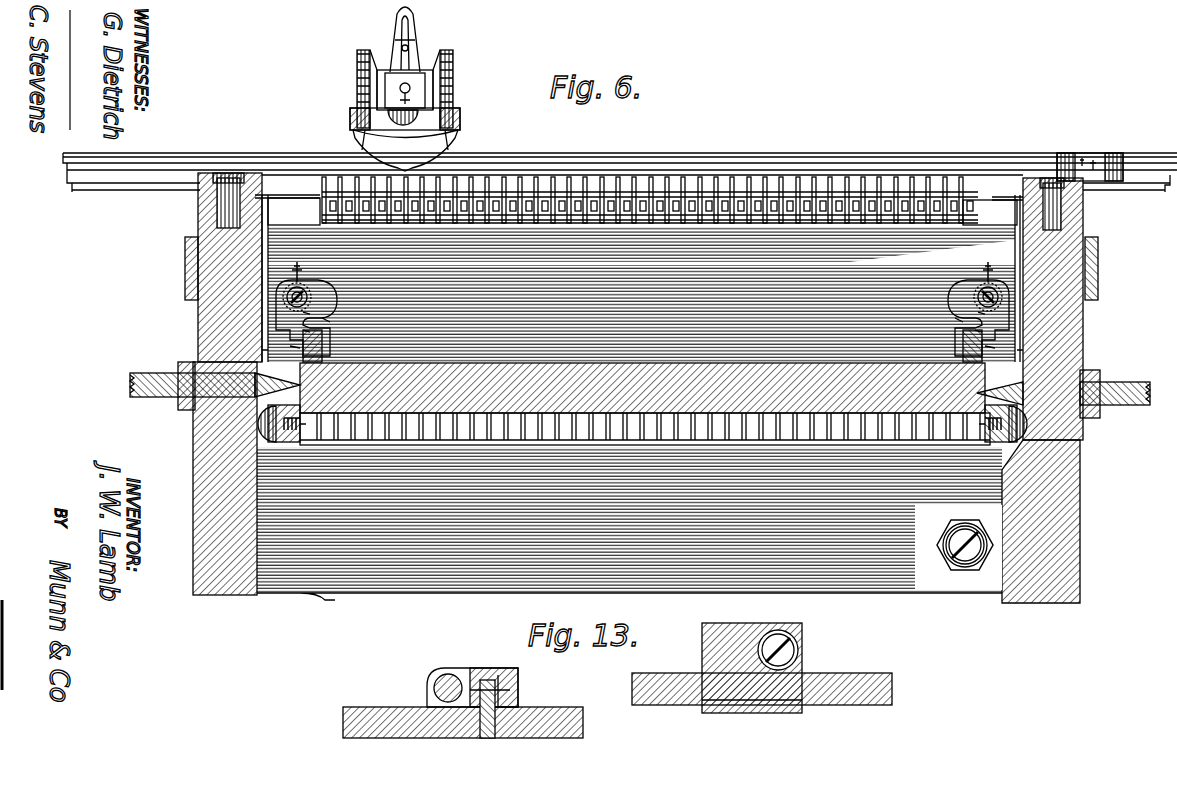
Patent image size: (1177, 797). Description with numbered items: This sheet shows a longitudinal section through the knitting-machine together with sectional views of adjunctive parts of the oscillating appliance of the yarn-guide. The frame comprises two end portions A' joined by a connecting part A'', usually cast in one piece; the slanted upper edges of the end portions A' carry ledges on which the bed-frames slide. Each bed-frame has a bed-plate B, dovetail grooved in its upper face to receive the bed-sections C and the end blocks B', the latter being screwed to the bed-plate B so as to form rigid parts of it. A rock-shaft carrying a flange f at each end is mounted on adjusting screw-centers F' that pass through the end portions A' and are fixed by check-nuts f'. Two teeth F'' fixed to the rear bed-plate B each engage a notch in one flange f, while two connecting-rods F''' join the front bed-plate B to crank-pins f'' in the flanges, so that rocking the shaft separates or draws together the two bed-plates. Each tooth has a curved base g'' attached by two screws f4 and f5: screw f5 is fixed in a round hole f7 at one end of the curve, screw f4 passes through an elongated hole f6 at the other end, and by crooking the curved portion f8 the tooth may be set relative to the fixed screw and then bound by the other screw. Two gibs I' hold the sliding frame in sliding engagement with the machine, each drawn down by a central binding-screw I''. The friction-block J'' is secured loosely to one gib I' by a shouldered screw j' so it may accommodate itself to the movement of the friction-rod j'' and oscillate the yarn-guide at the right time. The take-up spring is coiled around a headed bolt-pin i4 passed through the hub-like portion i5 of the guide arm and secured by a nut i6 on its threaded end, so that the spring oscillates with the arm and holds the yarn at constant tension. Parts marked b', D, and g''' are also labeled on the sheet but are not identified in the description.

In FIG. 6, the gibs I' is at (640, 282).
In FIG. 13, the gibs I' is at (617, 705).
In FIG. 6, the central binding-screw I'' is at (638, 177).
In FIG. 6, the plate b' is at (639, 184).
In FIG. 6, the end blocks B' is at (642, 211).
In FIG. 6, the comb / needle guide D is at (508, 185).
In FIG. 6, the bed-sections C is at (644, 208).
In FIG. 6, the bed-plate B is at (641, 313).
In FIG. 6, the screw f5 is at (300, 300).
In FIG. 6, the round hole f7 is at (292, 285).
In FIG. 6, the curved portion f8 is at (302, 312).
In FIG. 6, the screw f4 is at (305, 330).
In FIG. 6, the elongated hole f6 is at (300, 348).
In FIG. 6, the check-nuts f' is at (644, 343).
In FIG. 6, the teeth F'' is at (642, 340).
In FIG. 6, the curved bases g'' is at (337, 323).
In FIG. 6, the spring arm g''' is at (950, 340).
In FIG. 6, the adjusting screw-centers F' is at (640, 393).
In FIG. 6, the flange f is at (645, 429).
In FIG. 6, the connecting-rods F''' is at (645, 437).
In FIG. 6, the crank-pins f'' is at (636, 430).
In FIG. 6, the end portions A' is at (636, 482).
In FIG. 6, the connecting part A'' is at (629, 520).
In FIG. 6, the friction-block J'' is at (1090, 152).
In FIG. 13, the friction-block J'' is at (614, 680).
In FIG. 6, the screw j' is at (1075, 148).
In FIG. 13, the screw j' is at (650, 668).
In FIG. 6, the friction-rod j'' is at (620, 159).
In FIG. 13, the friction-rod j'' is at (603, 685).
In FIG. 6, the hub-like portion i5 is at (420, 62).
In FIG. 6, the nut i6 is at (377, 80).
In FIG. 6, the headed bolt-pin i4 is at (355, 95).